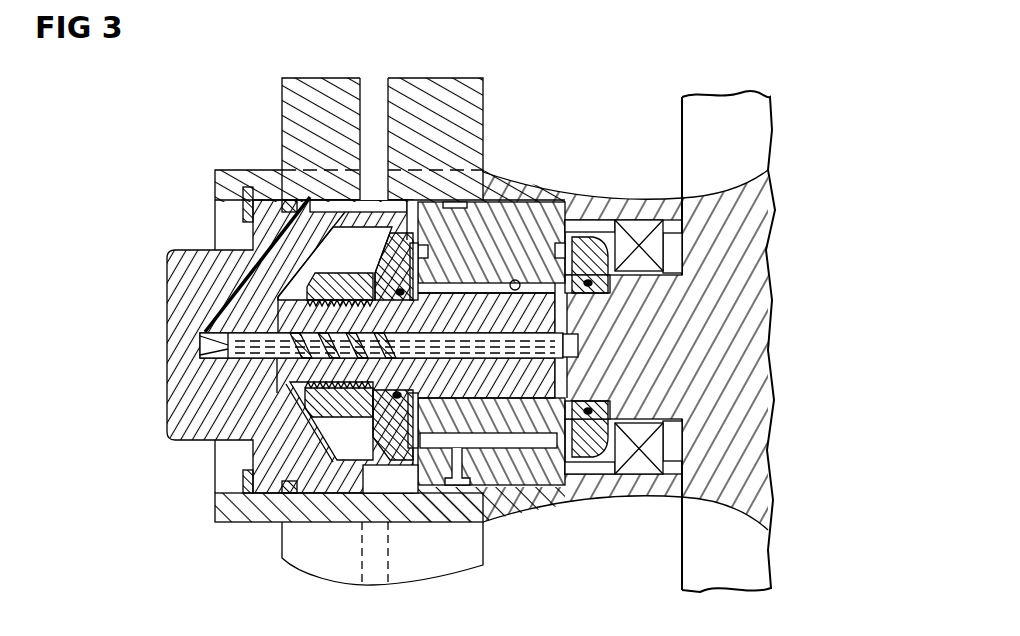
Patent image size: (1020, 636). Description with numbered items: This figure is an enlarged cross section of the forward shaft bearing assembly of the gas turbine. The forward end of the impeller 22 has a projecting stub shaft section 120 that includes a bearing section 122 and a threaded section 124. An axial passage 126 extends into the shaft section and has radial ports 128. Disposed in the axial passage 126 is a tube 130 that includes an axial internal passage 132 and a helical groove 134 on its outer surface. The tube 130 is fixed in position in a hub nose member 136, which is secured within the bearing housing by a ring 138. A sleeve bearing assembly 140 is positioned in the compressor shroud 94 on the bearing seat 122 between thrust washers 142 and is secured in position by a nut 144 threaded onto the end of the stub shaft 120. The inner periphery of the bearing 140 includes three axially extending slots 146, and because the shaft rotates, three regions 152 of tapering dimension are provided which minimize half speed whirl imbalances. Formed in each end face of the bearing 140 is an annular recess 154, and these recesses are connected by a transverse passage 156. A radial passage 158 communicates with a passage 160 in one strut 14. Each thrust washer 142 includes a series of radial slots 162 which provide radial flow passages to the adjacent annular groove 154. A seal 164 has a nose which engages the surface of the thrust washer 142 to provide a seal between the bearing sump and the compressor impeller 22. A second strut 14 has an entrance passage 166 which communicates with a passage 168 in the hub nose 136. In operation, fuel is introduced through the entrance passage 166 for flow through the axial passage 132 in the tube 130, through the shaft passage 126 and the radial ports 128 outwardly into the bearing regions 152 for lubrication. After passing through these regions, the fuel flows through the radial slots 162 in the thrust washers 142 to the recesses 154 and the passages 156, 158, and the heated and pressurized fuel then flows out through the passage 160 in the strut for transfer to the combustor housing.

The strut 14 is at (455, 84).
The impeller 22 is at (775, 308).
The compressor shroud 94 is at (255, 172).
The stub shaft section 120 is at (650, 392).
The bearing section 122 is at (455, 300).
The threaded section 124 is at (230, 445).
The axial passage 126 is at (470, 356).
The radial ports 128 is at (550, 355).
The tube 130 is at (205, 340).
The axial internal passage 132 is at (210, 349).
The helical groove 134 is at (400, 343).
The hub nose member 136 is at (170, 416).
The ring 138 is at (240, 208).
The sleeve bearing assembly 140 is at (527, 235).
The thrust washers 142 is at (577, 248).
The nut 144 is at (362, 283).
The axially extending slots 146 is at (525, 273).
The bearing regions of tapering dimension 152 is at (478, 223).
The annular recess 154 is at (418, 256).
The transverse passage 156 is at (491, 441).
The radial passage 158 is at (458, 487).
The passage 160 is at (375, 575).
The radial slots 162 is at (583, 220).
The seal 164 is at (648, 225).
The entrance passage 166 is at (375, 90).
The passage 168 is at (232, 315).